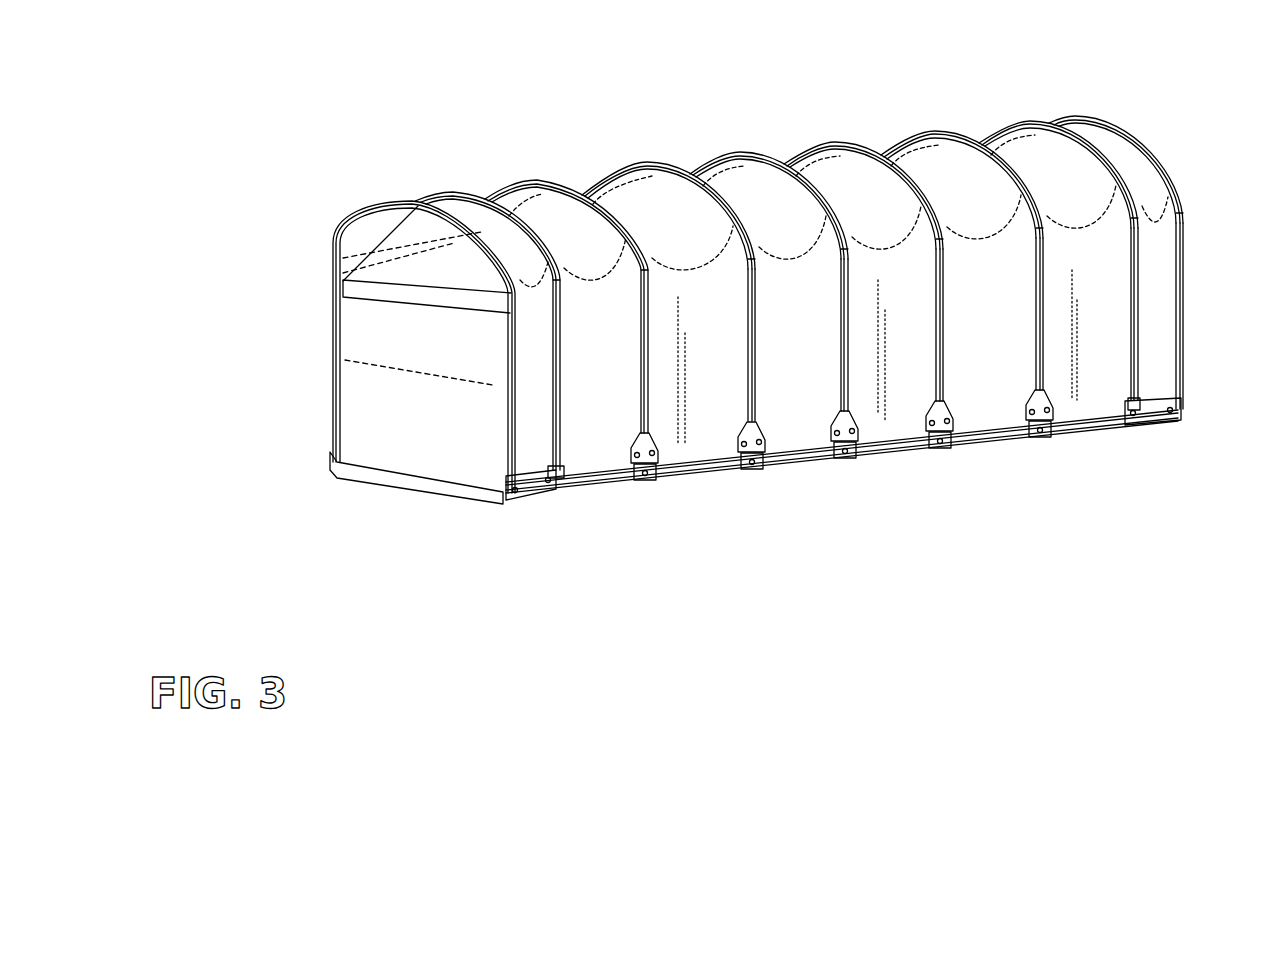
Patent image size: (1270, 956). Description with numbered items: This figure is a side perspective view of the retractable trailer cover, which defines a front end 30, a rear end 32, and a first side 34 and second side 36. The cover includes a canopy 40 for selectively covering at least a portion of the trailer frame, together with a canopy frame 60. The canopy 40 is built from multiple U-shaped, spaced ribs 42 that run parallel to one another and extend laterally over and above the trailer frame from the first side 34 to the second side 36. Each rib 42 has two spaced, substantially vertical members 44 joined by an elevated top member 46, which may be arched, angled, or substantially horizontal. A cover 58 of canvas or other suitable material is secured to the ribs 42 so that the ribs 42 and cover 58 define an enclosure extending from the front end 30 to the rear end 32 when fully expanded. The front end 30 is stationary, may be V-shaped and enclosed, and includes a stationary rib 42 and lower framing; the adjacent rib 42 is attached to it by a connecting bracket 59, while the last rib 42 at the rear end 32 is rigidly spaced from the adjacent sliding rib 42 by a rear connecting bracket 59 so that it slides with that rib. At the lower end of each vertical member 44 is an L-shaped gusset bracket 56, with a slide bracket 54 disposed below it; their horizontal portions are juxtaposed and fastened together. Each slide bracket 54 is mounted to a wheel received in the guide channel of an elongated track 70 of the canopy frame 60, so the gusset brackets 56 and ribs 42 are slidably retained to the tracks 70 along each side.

The front end 30 is at (340, 330).
The rear end 32 is at (1185, 300).
The first side 34 is at (613, 447).
The second side 36 is at (343, 280).
The canopy 40 is at (920, 172).
The ribs 42 is at (827, 309).
The vertical members 44 is at (1135, 270).
The top member 46 is at (1167, 193).
The slide bracket 54 is at (643, 465).
The gusset bracket 56 is at (655, 452).
The cover 58 is at (742, 198).
The connecting bracket 59 is at (540, 487).
The canopy frame 60 is at (977, 443).
The track 70 is at (1060, 427).